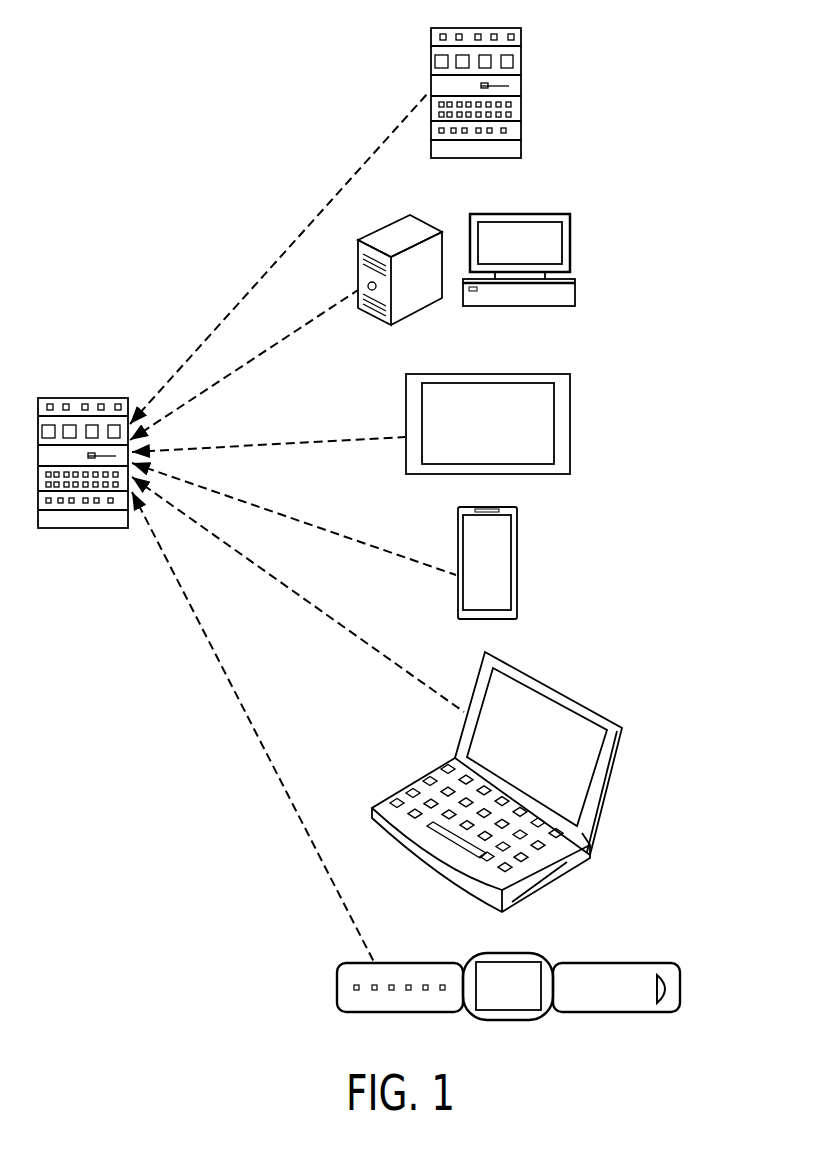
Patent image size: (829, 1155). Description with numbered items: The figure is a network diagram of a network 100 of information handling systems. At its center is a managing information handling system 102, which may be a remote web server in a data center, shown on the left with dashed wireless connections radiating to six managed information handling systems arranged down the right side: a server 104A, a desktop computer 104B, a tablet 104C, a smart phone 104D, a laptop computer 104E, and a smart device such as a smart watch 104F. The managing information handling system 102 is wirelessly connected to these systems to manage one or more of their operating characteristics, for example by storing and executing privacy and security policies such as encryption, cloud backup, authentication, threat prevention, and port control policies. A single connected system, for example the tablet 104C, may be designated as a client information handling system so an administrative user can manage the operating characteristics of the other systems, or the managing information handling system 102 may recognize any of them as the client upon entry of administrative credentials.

The network 100 is at (176, 152).
The managing information handling system 102 is at (86, 398).
The server 104A is at (521, 85).
The desktop computer 104B is at (570, 245).
The tablet 104C is at (570, 423).
The smart phone 104D is at (517, 560).
The laptop computer 104E is at (600, 820).
The smart watch 104F is at (680, 988).